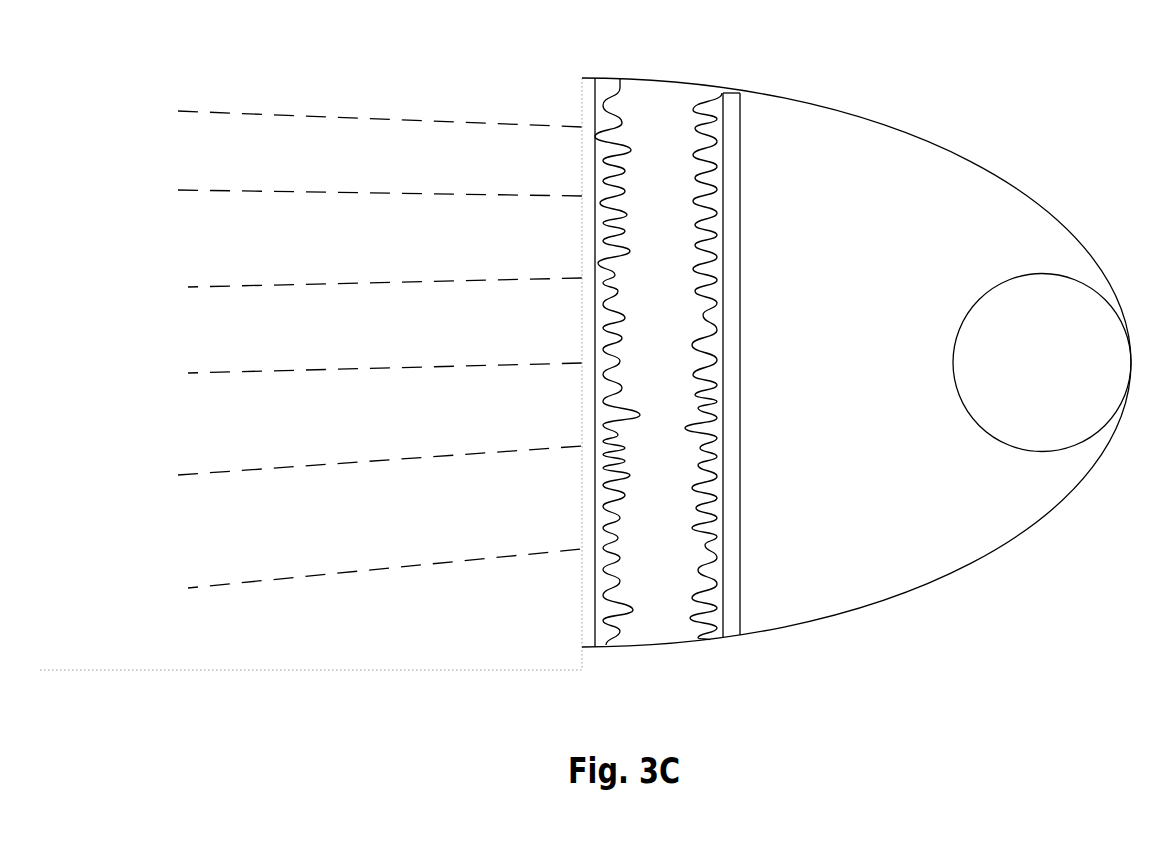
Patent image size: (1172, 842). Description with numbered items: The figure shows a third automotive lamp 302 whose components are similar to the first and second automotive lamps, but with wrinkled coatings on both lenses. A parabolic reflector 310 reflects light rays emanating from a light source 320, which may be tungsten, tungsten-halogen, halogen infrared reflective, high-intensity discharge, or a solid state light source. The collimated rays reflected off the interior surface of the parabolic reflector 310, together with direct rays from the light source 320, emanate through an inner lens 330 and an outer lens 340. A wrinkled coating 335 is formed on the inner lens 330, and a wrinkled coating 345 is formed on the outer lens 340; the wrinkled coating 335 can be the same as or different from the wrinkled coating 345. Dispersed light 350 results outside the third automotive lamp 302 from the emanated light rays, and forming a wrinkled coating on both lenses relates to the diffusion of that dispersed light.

The third automotive lamp 302 is at (928, 80).
The parabolic reflector 310 is at (888, 278).
The light source 320 is at (1065, 371).
The inner lens 330 is at (743, 357).
The wrinkled coating 335 is at (714, 88).
The outer lens 340 is at (590, 637).
The wrinkled coating 345 is at (609, 76).
The dispersed light 350 is at (358, 582).